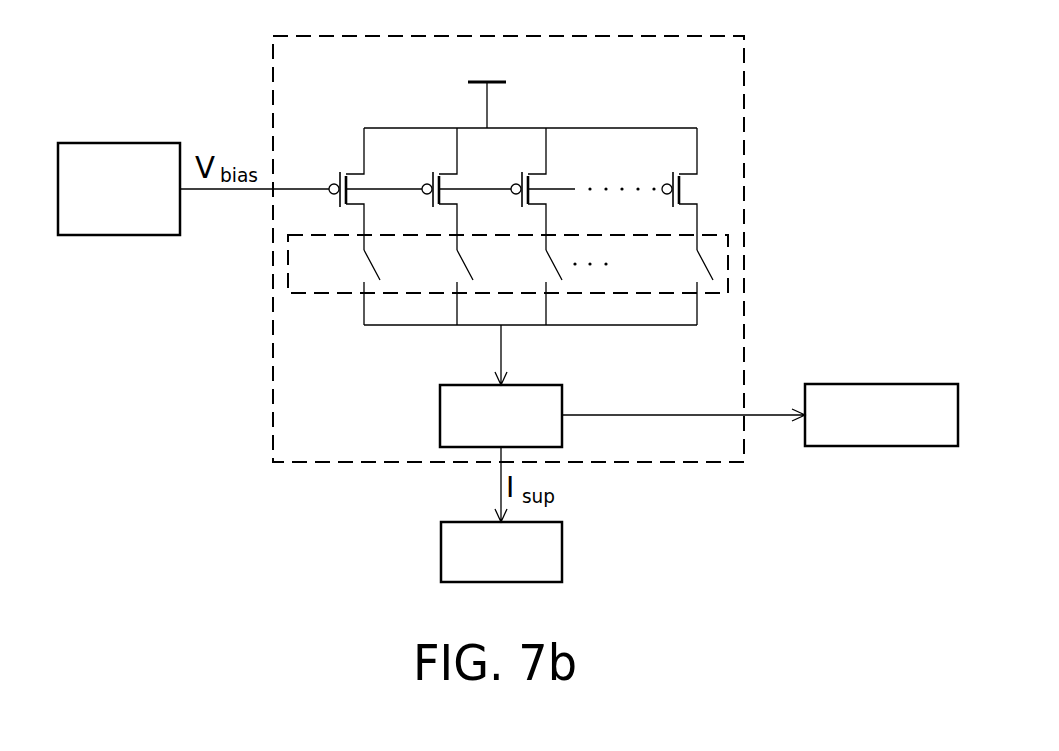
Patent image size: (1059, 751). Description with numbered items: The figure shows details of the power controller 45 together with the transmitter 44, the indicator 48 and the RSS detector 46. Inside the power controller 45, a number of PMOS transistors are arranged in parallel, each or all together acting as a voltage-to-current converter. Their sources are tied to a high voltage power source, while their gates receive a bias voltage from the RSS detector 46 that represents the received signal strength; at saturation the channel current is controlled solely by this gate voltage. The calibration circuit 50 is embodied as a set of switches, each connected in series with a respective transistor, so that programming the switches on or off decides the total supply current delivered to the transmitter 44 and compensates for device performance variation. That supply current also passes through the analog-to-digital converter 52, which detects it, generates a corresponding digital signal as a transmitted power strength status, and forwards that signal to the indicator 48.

The transmitter 44 is at (562, 551).
The power controller 45 is at (745, 80).
The RSS detector 46 is at (150, 143).
The indicator 48 is at (898, 384).
The calibration circuit 50 is at (728, 262).
The analog-to-digital converter 52 is at (440, 417).